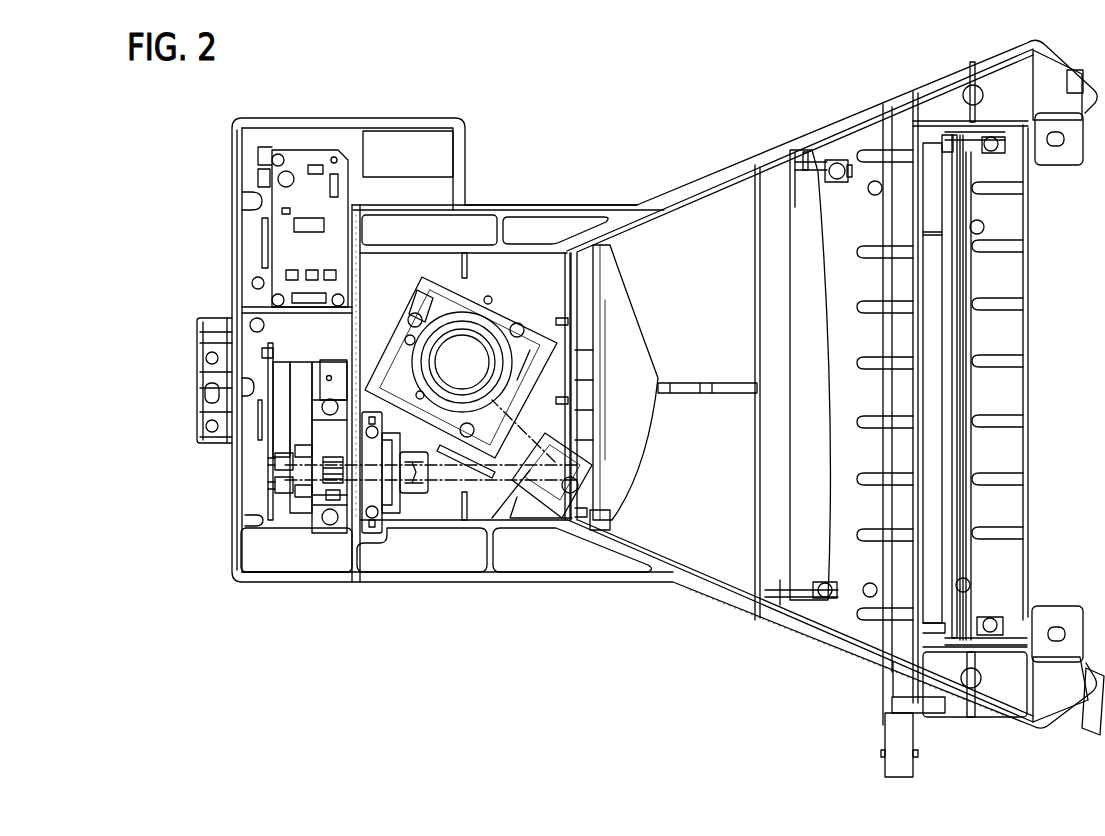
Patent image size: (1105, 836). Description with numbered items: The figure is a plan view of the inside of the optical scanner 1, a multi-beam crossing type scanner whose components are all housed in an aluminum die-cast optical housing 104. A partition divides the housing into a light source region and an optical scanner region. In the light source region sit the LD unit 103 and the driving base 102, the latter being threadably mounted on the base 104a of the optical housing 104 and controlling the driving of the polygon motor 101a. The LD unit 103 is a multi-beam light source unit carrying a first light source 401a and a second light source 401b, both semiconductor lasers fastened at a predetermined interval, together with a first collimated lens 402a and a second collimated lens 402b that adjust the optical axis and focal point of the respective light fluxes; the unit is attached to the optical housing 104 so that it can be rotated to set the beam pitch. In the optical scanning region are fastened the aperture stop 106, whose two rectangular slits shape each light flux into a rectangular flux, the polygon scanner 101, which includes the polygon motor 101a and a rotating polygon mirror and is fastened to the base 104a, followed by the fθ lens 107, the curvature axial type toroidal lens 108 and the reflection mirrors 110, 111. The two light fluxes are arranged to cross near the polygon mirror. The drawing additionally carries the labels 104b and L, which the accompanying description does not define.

The optical scanner 1 is at (586, 76).
The polygon scanner 101 is at (492, 299).
The polygon motor 101a is at (478, 352).
The driving base 102 is at (326, 141).
The LD unit 103 is at (306, 548).
The optical housing 104 is at (219, 148).
The base 104a is at (717, 527).
The frame partition wall 104b is at (360, 542).
The aperture stop 106 is at (362, 443).
The fθ lens 107 is at (637, 440).
The curvature axial type toroidal lens 108 is at (813, 280).
The reflection mirror 110 is at (585, 487).
The reflection mirror 111 is at (950, 456).
The first light source 401a is at (283, 467).
The second light source 401b is at (280, 492).
The first collimated lens 402a is at (337, 457).
The second collimated lens 402b is at (332, 512).
The optical axis L is at (454, 502).